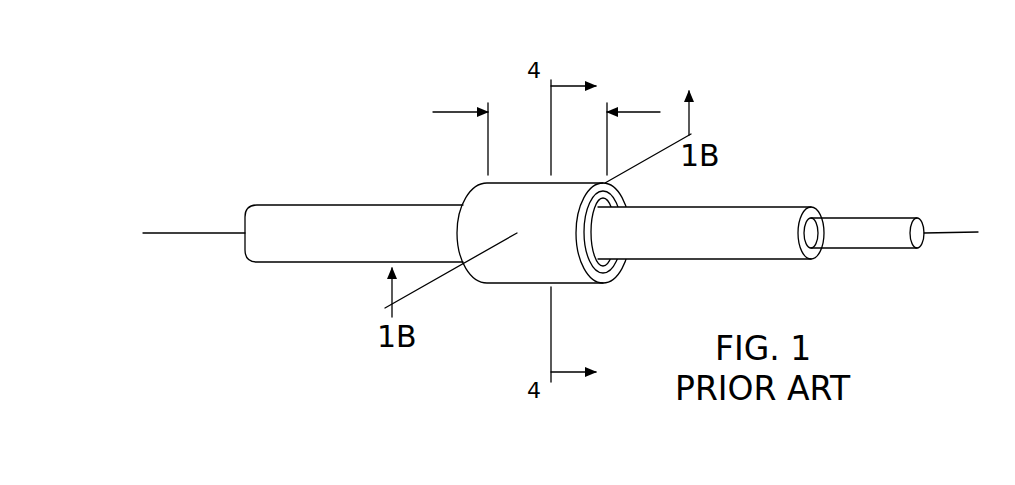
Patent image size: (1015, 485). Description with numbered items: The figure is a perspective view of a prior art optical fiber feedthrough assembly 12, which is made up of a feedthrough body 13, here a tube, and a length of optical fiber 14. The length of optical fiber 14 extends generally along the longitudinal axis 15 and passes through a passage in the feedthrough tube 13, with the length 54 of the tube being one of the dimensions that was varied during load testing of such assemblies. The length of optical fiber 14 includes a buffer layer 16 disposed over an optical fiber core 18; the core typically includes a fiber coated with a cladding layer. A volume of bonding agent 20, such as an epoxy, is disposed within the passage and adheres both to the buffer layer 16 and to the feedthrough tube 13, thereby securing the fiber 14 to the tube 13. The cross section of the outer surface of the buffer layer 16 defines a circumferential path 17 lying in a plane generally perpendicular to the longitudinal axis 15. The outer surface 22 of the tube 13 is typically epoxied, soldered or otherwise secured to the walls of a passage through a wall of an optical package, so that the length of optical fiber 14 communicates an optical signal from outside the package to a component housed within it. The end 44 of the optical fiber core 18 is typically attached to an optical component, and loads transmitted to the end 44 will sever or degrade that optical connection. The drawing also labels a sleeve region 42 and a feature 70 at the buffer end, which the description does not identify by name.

The optical feedthrough assembly 12 is at (350, 166).
The feedthrough body 13 is at (512, 304).
The length of optical fiber 14 is at (700, 274).
The longitudinal axis 15 is at (190, 232).
The buffer layer 16 is at (817, 255).
The circumferential path 17 is at (730, 238).
The optical fiber core 18 is at (878, 238).
The volume of bonding agent 20 is at (608, 265).
The outer surface 22 is at (521, 203).
The sleeve 42 is at (243, 243).
The end 44 is at (923, 229).
The length 54 is at (452, 111).
The buffer end 70 is at (840, 210).